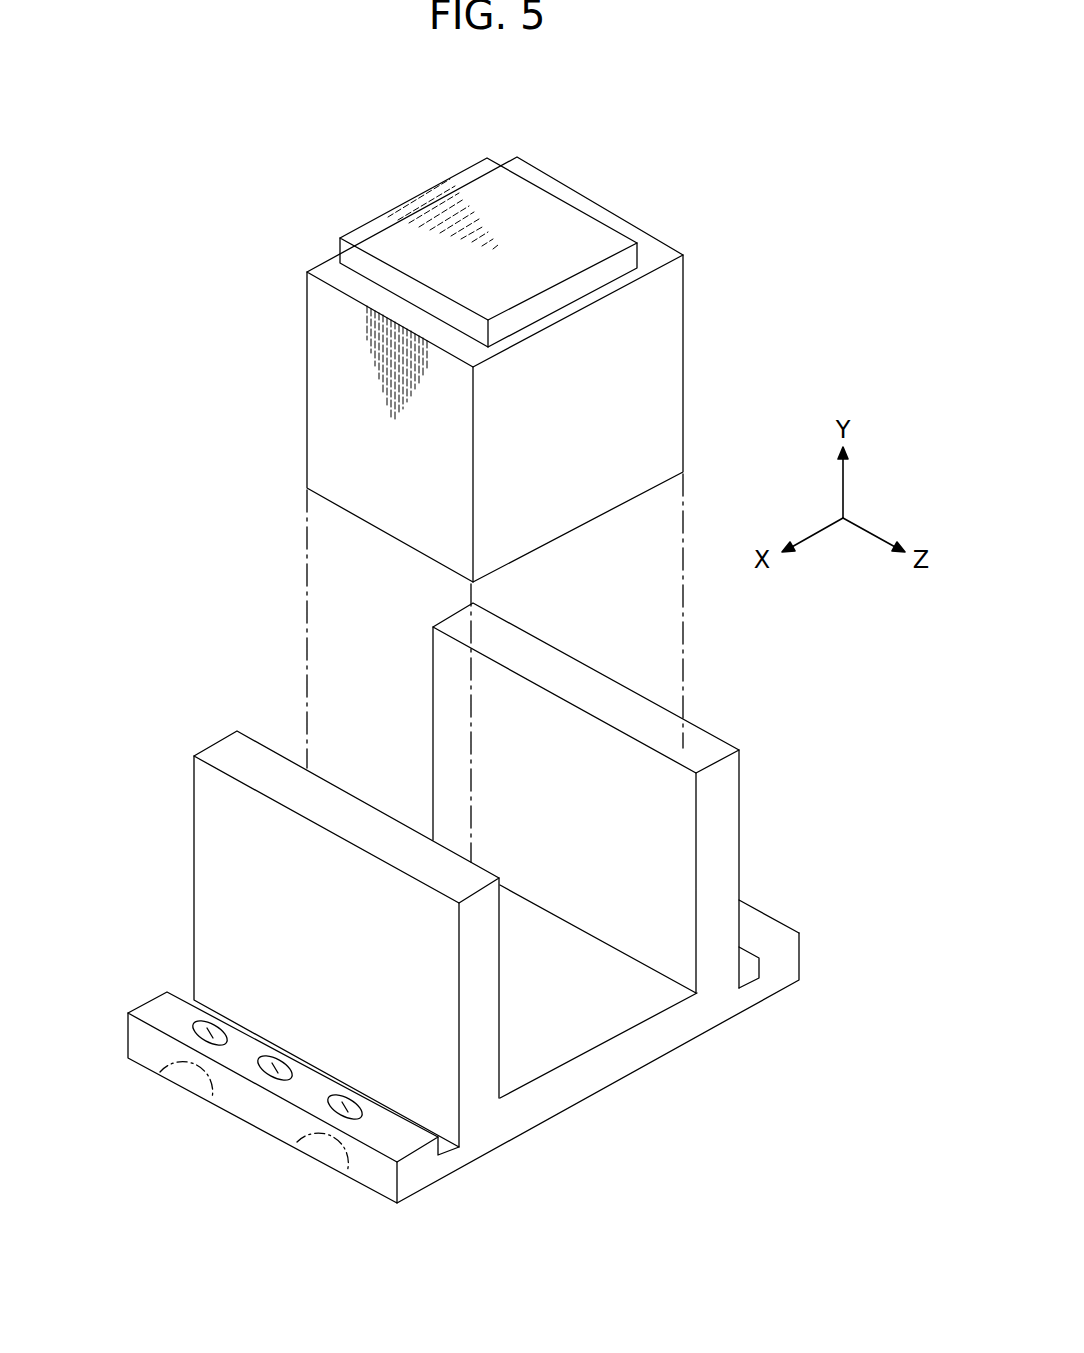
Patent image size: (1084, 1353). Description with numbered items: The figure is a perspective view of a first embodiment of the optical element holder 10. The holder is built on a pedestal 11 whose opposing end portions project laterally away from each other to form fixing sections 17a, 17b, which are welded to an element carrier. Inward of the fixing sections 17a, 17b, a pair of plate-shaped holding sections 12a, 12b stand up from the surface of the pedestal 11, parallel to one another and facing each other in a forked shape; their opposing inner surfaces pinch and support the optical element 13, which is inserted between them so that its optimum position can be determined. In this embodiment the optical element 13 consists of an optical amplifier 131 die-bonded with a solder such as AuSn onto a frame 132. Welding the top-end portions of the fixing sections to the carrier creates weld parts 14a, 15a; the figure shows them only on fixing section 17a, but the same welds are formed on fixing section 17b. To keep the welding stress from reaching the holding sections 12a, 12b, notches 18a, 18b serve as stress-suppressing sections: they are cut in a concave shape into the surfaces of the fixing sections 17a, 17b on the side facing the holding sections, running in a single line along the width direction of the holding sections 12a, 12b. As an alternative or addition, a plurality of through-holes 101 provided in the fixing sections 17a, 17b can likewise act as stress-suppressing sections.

The optical element holder 10 is at (228, 668).
The pedestal 11 is at (548, 1040).
The holding section 12a is at (230, 895).
The holding section 12b is at (673, 795).
The optical element 13 is at (560, 127).
The optical amplifier 131 is at (558, 215).
The frame 132 is at (653, 257).
The weld part 14a is at (195, 1078).
The weld part 15a is at (333, 1153).
The fixing section 17a is at (392, 1143).
The fixing section 17b is at (755, 923).
The notch 18a is at (448, 1138).
The notch 18b is at (748, 970).
The through-hole 101 is at (188, 1022).